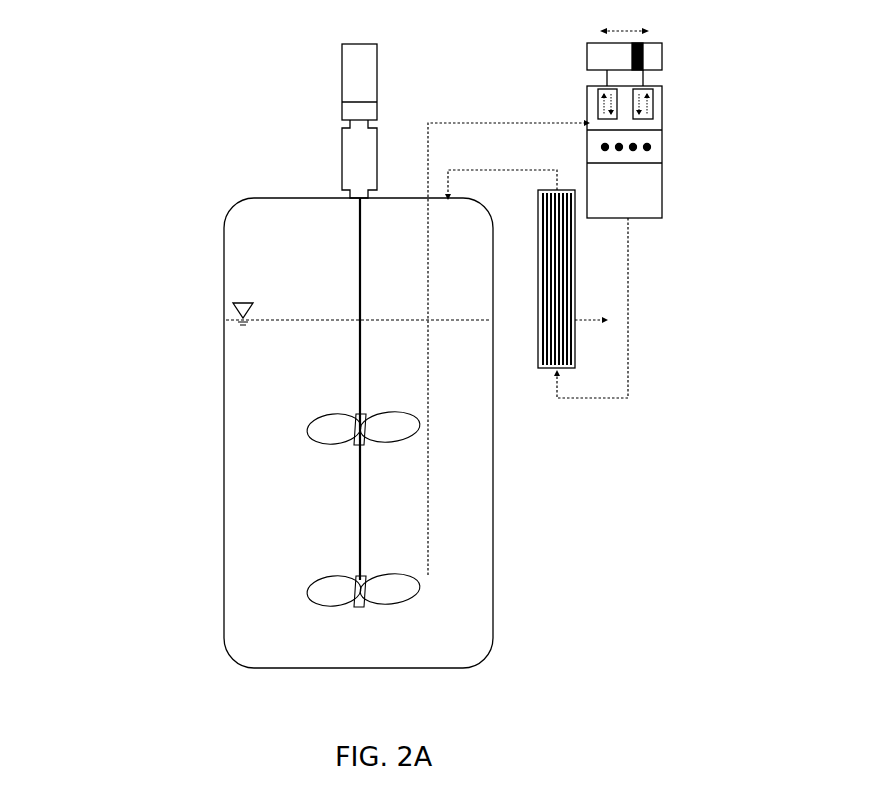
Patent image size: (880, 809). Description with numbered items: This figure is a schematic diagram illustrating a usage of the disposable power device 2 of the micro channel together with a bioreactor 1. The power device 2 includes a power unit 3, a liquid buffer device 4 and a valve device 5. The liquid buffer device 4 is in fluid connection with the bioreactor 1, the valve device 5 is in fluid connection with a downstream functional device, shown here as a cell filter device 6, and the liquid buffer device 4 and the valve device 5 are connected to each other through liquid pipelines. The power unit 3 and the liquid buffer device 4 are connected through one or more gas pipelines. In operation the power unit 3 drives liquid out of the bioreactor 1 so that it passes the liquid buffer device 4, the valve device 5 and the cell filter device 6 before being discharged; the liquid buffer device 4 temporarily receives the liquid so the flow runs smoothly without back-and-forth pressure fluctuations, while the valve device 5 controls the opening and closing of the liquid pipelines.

The bioreactor 1 is at (178, 237).
The power device of the micro channel 2 is at (678, 113).
The power unit 3 is at (643, 63).
The liquid buffer device 4 is at (639, 110).
The valve device 5 is at (651, 122).
The cell filter device 6 is at (553, 280).